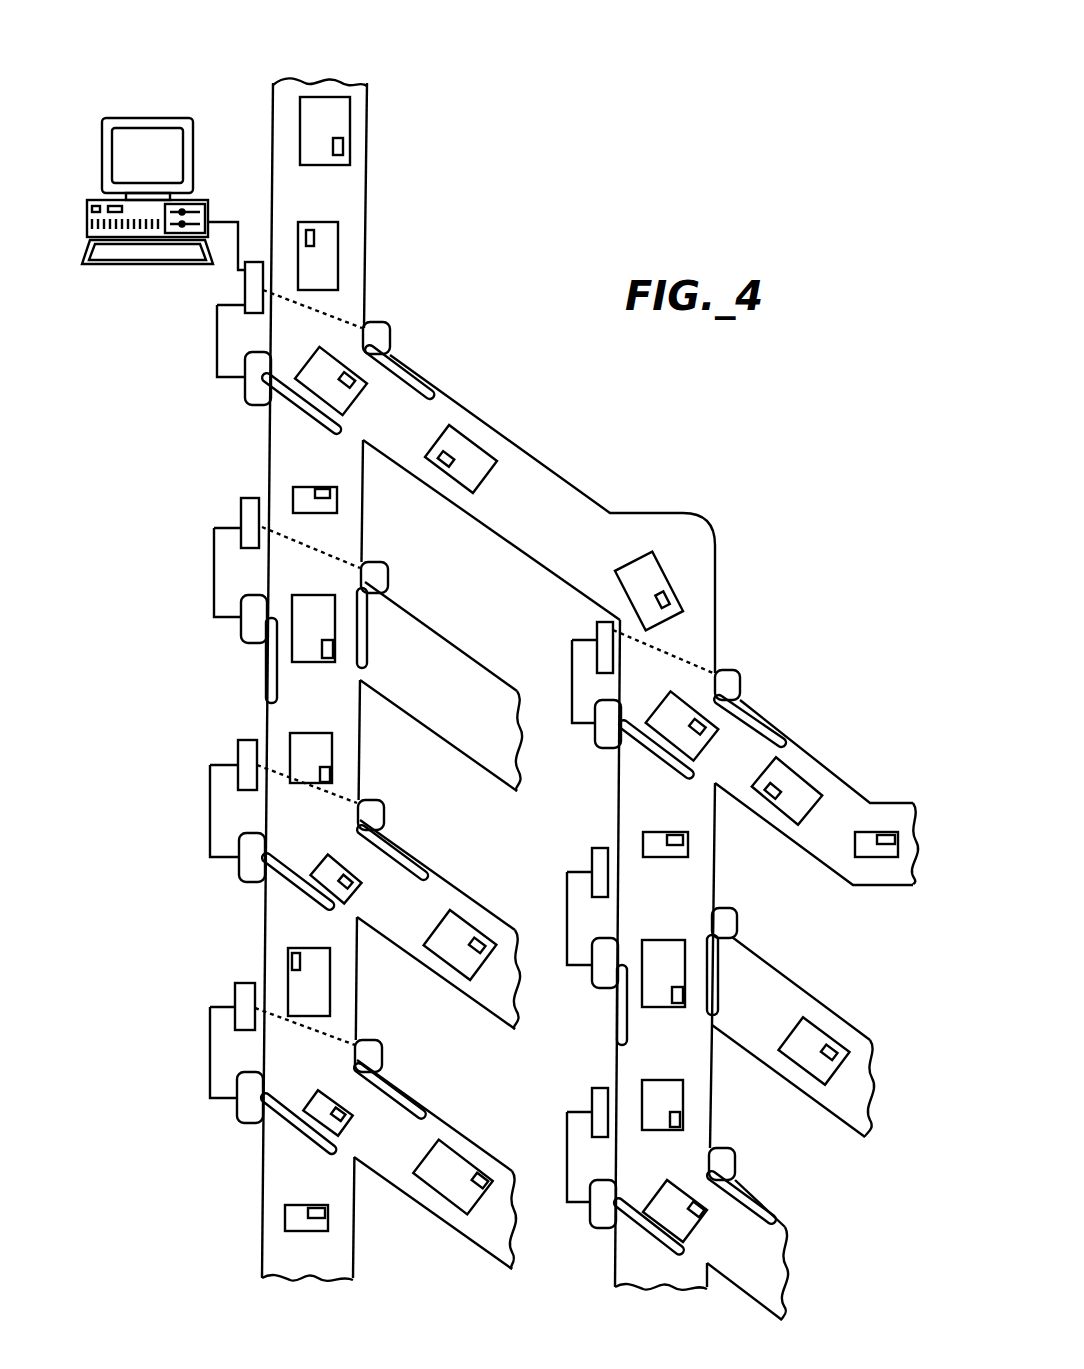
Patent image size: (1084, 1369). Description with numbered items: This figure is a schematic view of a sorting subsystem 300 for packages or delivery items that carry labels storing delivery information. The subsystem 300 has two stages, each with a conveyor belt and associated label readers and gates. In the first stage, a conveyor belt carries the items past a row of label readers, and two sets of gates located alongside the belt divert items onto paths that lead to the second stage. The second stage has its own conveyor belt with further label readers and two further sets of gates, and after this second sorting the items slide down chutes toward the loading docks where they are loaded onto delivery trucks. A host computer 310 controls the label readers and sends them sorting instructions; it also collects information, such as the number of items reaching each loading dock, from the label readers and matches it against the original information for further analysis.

The sorting subsystem 300 is at (269, 50).
The host computer 310 is at (132, 118).